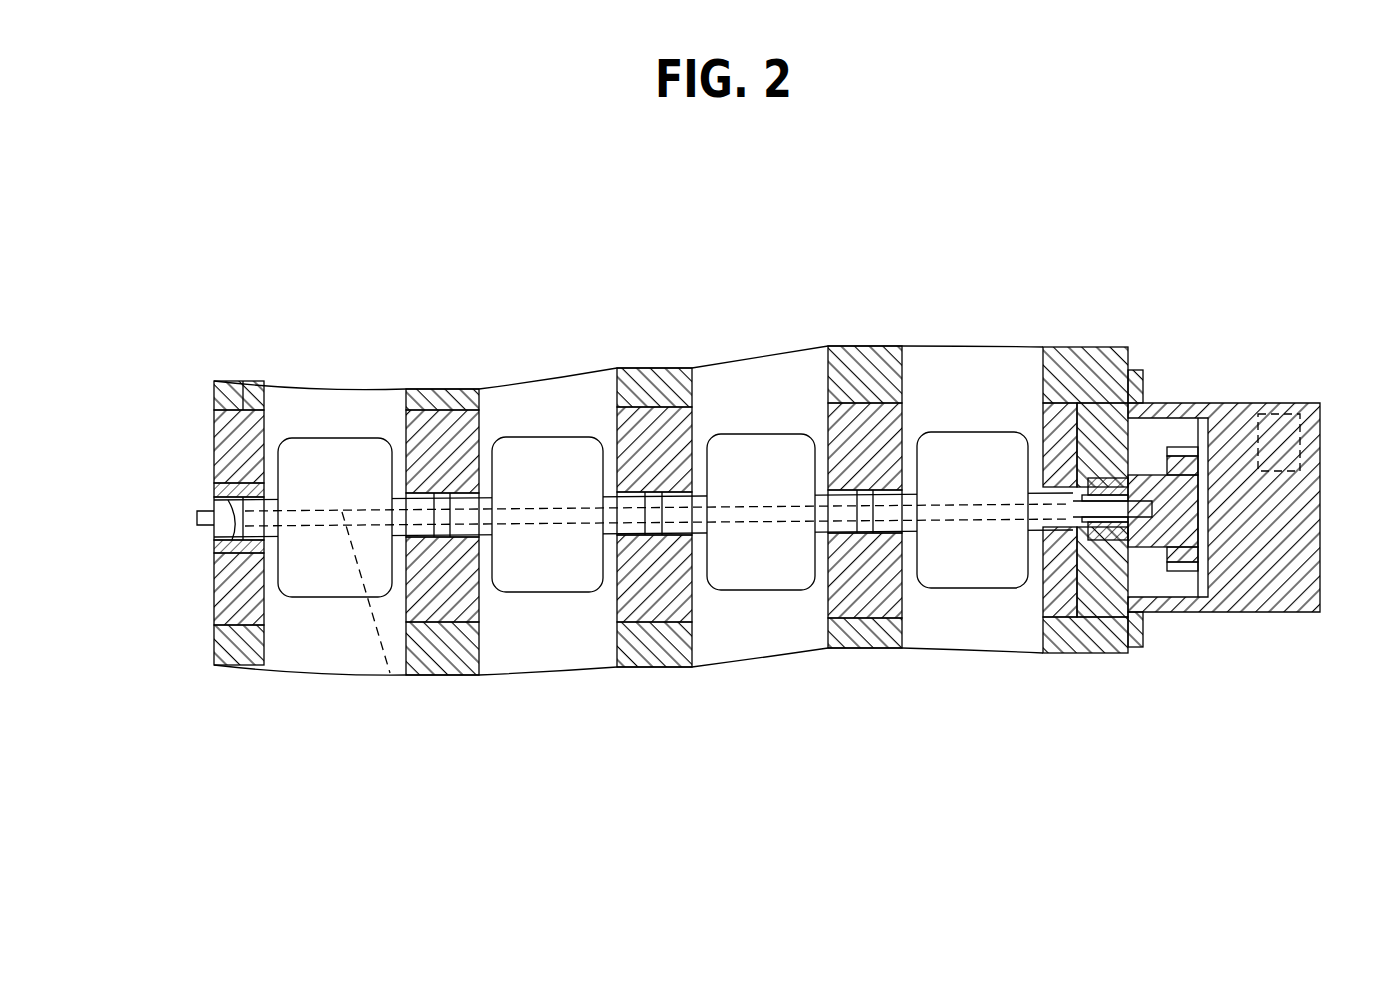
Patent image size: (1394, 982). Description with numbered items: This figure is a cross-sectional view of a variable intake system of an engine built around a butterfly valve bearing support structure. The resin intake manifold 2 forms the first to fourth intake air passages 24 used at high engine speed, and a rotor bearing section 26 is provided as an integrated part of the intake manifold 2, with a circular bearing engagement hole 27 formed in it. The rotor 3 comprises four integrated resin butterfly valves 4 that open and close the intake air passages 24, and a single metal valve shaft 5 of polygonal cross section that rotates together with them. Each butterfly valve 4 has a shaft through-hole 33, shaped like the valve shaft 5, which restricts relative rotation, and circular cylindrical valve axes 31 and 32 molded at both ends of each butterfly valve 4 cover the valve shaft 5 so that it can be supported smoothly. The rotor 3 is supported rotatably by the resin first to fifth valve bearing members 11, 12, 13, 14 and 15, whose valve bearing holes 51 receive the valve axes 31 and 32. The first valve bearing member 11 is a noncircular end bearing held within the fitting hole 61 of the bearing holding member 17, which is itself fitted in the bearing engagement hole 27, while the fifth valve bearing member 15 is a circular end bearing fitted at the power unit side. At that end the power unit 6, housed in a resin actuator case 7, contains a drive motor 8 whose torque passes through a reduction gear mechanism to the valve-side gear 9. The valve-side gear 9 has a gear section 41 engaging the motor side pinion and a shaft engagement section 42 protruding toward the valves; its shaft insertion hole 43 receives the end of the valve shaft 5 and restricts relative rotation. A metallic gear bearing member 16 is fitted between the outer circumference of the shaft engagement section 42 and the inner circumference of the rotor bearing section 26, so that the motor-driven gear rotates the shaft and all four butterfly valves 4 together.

The intake manifold 2 is at (1122, 333).
The rotor 3 is at (304, 422).
The butterfly valve 4 is at (347, 587).
The valve shaft 5 is at (222, 488).
The power unit 6 is at (1300, 380).
The actuator case 7 is at (1238, 402).
The drive motor 8 is at (1304, 436).
The valve-side gear 9 is at (1187, 562).
The first valve bearing member 11 is at (217, 420).
The second valve bearing member 12 is at (476, 582).
The third valve bearing member 13 is at (684, 605).
The fourth valve bearing member 14 is at (892, 602).
The fifth valve bearing member 15 is at (1045, 603).
The gear bearing member 16 is at (1093, 528).
The bearing holding member 17 is at (258, 612).
The intake air passage 24 is at (345, 393).
The rotor bearing section 26 is at (245, 385).
The bearing engagement hole 27 is at (216, 405).
The valve axis 31 is at (250, 535).
The valve axis 32 is at (422, 537).
The shaft through-hole 33 is at (390, 676).
The gear section 41 is at (1182, 447).
The shaft engagement section 42 is at (1108, 542).
The shaft insertion hole 43 is at (1140, 555).
The valve bearing hole 51 is at (238, 541).
The fitting hole 61 is at (258, 530).